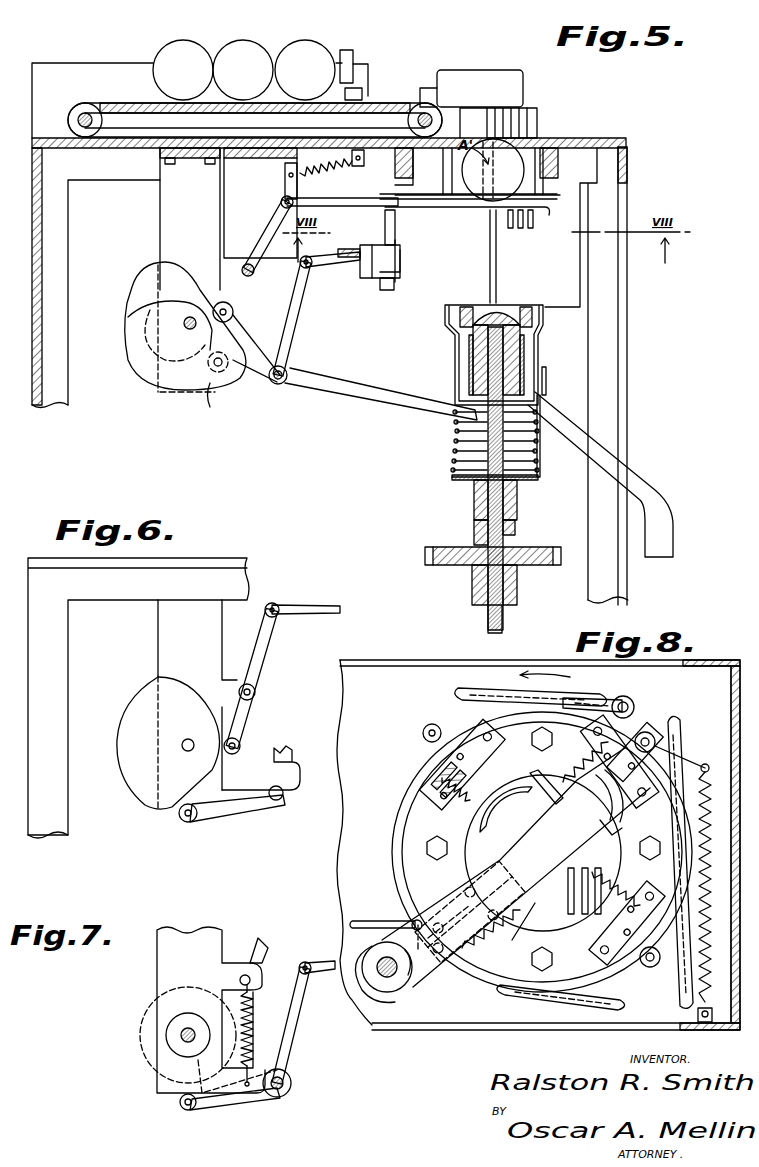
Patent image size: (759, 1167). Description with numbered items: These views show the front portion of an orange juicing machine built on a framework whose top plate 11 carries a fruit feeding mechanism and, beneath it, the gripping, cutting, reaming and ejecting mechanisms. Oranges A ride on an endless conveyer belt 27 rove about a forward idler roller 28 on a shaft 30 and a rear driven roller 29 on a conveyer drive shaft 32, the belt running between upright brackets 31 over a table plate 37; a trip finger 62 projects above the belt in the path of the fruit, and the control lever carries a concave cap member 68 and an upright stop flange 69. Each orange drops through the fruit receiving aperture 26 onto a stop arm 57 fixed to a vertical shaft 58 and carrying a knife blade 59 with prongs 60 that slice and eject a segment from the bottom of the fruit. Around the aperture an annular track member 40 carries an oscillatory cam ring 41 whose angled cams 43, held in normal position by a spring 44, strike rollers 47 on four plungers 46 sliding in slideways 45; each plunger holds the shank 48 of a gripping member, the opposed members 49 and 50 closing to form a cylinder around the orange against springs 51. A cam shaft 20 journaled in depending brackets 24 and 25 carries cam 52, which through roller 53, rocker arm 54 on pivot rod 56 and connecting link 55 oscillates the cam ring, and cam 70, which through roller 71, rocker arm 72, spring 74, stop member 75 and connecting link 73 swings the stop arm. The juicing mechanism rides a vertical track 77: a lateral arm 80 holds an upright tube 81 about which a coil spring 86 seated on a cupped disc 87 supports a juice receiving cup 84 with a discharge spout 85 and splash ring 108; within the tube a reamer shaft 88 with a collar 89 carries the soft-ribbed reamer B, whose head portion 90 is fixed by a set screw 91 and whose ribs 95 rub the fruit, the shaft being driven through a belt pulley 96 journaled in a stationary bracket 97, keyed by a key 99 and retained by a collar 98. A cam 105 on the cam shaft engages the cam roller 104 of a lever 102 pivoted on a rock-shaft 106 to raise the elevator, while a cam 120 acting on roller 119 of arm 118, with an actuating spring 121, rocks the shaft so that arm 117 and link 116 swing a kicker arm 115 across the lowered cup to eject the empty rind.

In FIG. 5, the top plate 11 is at (73, 149).
In FIG. 5, the cam shaft 20 is at (190, 331).
In FIG. 6, the cam shaft 20 is at (188, 754).
In FIG. 7, the cam shaft 20 is at (182, 1035).
In FIG. 5, the bracket 24 is at (168, 216).
In FIG. 6, the bracket 25 is at (160, 652).
In FIG. 7, the bracket 25 is at (162, 955).
In FIG. 5, the fruit receiving aperture 26 is at (551, 142).
In FIG. 5, the endless conveyer belt 27 is at (138, 103).
In FIG. 5, the forward idler roller 28 is at (412, 123).
In FIG. 5, the rear driven roller 29 is at (95, 122).
In FIG. 5, the shaft 30 is at (436, 120).
In FIG. 5, the upright brackets 31 is at (50, 106).
In FIG. 5, the conveyer drive shaft 32 is at (90, 110).
In FIG. 5, the table plate 37 is at (262, 118).
In FIG. 8, the annular track member 40 is at (542, 852).
In FIG. 8, the cam ring 41 is at (503, 996).
In FIG. 8, the angled cams 43 is at (464, 694).
In FIG. 8, the spring 44 is at (700, 990).
In FIG. 8, the slideways 45 is at (626, 784).
In FIG. 8, the horizontal plungers 46 is at (624, 804).
In FIG. 8, the anti-friction roller 47 is at (648, 740).
In FIG. 8, the shank 48 is at (480, 772).
In FIG. 8, the gripping members 49 is at (508, 793).
In FIG. 8, the gripping members 50 is at (558, 807).
In FIG. 8, the spring 51 is at (453, 798).
In FIG. 6, the cam 52 is at (168, 743).
In FIG. 6, the roller 53 is at (244, 754).
In FIG. 6, the rocker arm 54 is at (260, 670).
In FIG. 6, the connecting link 55 is at (324, 606).
In FIG. 8, the connecting link 55 is at (588, 698).
In FIG. 5, the pivot rod 56 is at (255, 270).
In FIG. 6, the pivot rod 56 is at (256, 693).
In FIG. 7, the pivot rod 56 is at (250, 980).
In FIG. 5, the stop arm 57 is at (541, 210).
In FIG. 8, the stop arm 57 is at (516, 867).
In FIG. 5, the vertical shaft 58 is at (388, 292).
In FIG. 8, the vertical shaft 58 is at (378, 991).
In FIG. 5, the knife blade 59 is at (548, 199).
In FIG. 8, the knife blade 59 is at (476, 911).
In FIG. 5, the prongs 60 is at (530, 230).
In FIG. 8, the prongs 60 is at (572, 870).
In FIG. 5, the trip finger 62 is at (355, 55).
In FIG. 5, the cap member 68 is at (533, 109).
In FIG. 5, the stop flange 69 is at (523, 74).
In FIG. 5, the cam 70 is at (170, 334).
In FIG. 5, the roller 71 is at (218, 306).
In FIG. 5, the rocker arm 72 is at (262, 228).
In FIG. 5, the connecting link 73 is at (343, 201).
In FIG. 8, the connecting link 73 is at (378, 921).
In FIG. 5, the spring 74 is at (348, 167).
In FIG. 5, the stop member 75 is at (288, 168).
In FIG. 5, the track 77 is at (489, 258).
In FIG. 5, the lateral arm 80 is at (518, 497).
In FIG. 5, the upright tube 81 is at (496, 438).
In FIG. 5, the juice receiving cup 84 is at (455, 365).
In FIG. 5, the discharge spout 85 is at (662, 499).
In FIG. 5, the coil spring 86 is at (456, 455).
In FIG. 5, the cupped disc 87 is at (452, 477).
In FIG. 5, the reamer shaft 88 is at (487, 538).
In FIG. 5, the collar 89 is at (473, 526).
In FIG. 5, the head portion 90 is at (498, 316).
In FIG. 5, the set screw 91 is at (470, 342).
In FIG. 5, the radial ribs 95 is at (522, 352).
In FIG. 5, the belt pulley 96 is at (433, 550).
In FIG. 5, the stationary bracket 97 is at (518, 585).
In FIG. 5, the collar 98 is at (505, 606).
In FIG. 5, the key 99 is at (503, 552).
In FIG. 5, the lever 102 is at (338, 392).
In FIG. 5, the cam roller 104 is at (210, 386).
In FIG. 5, the cam 105 is at (185, 327).
In FIG. 5, the rock-shaft 106 is at (274, 382).
In FIG. 7, the rock-shaft 106 is at (290, 1088).
In FIG. 5, the splash ring 108 is at (466, 306).
In FIG. 5, the kicker arm 115 is at (364, 246).
In FIG. 5, the link 116 is at (312, 268).
In FIG. 7, the link 116 is at (317, 978).
In FIG. 5, the arm 117 is at (290, 322).
In FIG. 7, the arm 117 is at (298, 1040).
In FIG. 7, the arm 118 is at (228, 1108).
In FIG. 7, the roller 119 is at (184, 1109).
In FIG. 7, the cam 120 is at (142, 1066).
In FIG. 7, the actuating spring 121 is at (253, 1012).
In FIG. 5, the oranges A is at (252, 49).
In FIG. 5, the juicing reamer B is at (466, 380).